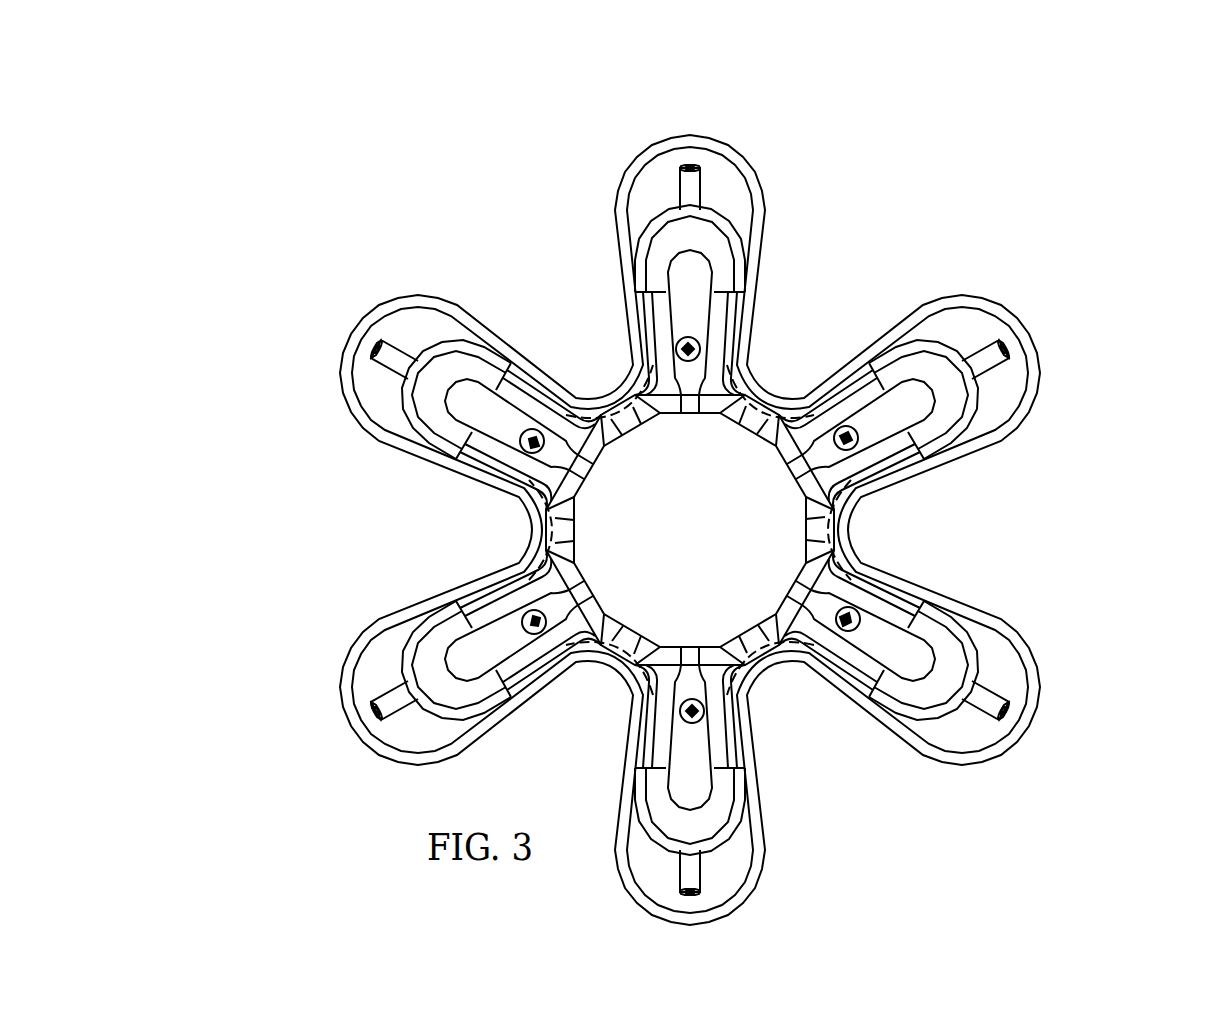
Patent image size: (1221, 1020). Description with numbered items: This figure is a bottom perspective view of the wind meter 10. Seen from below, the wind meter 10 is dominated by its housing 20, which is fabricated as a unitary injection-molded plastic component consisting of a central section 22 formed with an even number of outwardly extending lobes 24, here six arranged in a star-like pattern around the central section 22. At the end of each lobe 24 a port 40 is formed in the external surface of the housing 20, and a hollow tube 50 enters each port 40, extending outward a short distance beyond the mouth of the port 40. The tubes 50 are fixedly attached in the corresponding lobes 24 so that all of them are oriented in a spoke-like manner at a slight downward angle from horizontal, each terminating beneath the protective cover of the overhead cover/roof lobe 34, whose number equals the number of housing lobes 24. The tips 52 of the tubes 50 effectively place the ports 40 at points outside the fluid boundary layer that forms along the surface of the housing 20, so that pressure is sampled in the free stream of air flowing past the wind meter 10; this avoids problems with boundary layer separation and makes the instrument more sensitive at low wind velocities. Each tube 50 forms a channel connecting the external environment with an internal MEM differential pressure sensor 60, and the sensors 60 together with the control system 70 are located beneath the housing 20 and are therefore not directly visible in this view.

The wind meter 10 is at (713, 523).
The housing 20 is at (855, 503).
The central section 22 is at (666, 538).
The lobes 24 is at (487, 422).
The cover/roof lobes 34 is at (735, 863).
The ports 40 is at (975, 738).
The tubular structures 50 is at (973, 735).
The tips 52 is at (995, 350).
The MEM differential pressure sensors 60 is at (600, 513).
The control system 70 is at (335, 506).